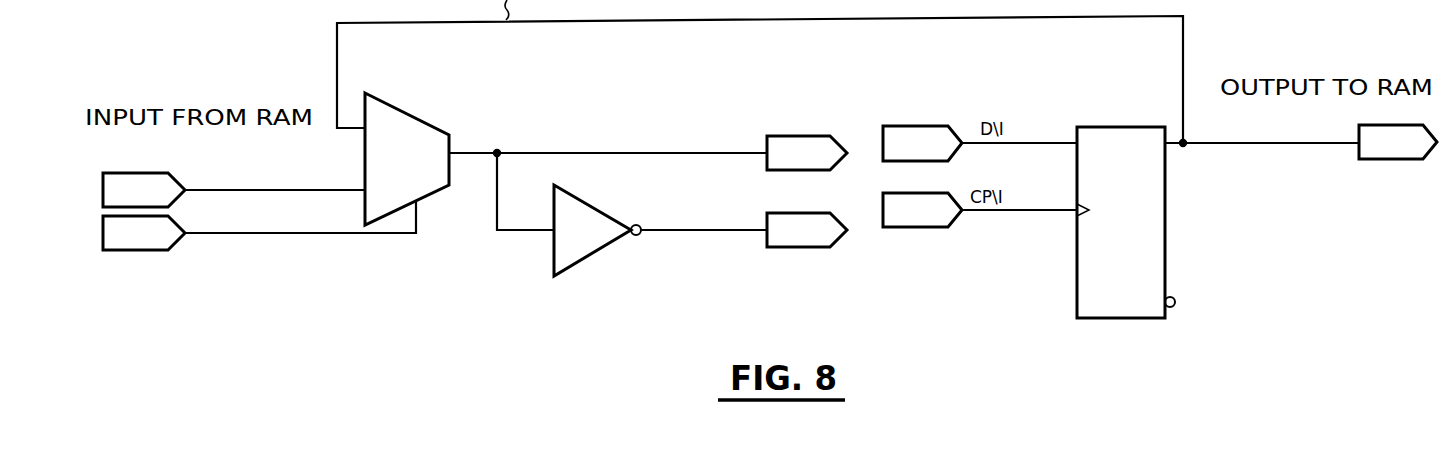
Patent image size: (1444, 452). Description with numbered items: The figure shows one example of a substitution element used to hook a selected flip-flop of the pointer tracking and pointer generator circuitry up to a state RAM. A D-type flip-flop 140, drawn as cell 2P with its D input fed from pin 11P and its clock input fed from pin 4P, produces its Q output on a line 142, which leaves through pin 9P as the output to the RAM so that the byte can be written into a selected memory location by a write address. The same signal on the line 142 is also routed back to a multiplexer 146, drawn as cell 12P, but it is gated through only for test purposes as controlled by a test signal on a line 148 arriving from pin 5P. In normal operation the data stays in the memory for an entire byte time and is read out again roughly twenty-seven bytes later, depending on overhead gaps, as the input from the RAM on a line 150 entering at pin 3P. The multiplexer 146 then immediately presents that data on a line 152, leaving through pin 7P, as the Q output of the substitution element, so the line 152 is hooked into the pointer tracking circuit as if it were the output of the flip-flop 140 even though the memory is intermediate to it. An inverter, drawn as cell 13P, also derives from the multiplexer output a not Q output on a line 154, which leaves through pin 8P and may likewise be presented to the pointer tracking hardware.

The flip-flop 140 is at (1090, 213).
The line (Q output) 142 is at (1280, 146).
The multiplexer 146 is at (451, 137).
The line (test signal) 148 is at (418, 224).
The line (RAM read-out) 150 is at (318, 190).
The line (Q output of substitution element) 152 is at (629, 153).
The line (not Q output) 154 is at (676, 232).
The multiplexer MUX21H 12P is at (407, 133).
The inverter IV 13P is at (600, 230).
The flip-flop cell FD1 2P is at (1126, 212).
The input pin 3P is at (144, 190).
The input pin 5P is at (144, 233).
The output pin 7P is at (807, 153).
The output pin 8P is at (807, 230).
The output pin 9P is at (1398, 142).
The input pin 11P is at (922, 143).
The clock input pin 4P is at (922, 210).